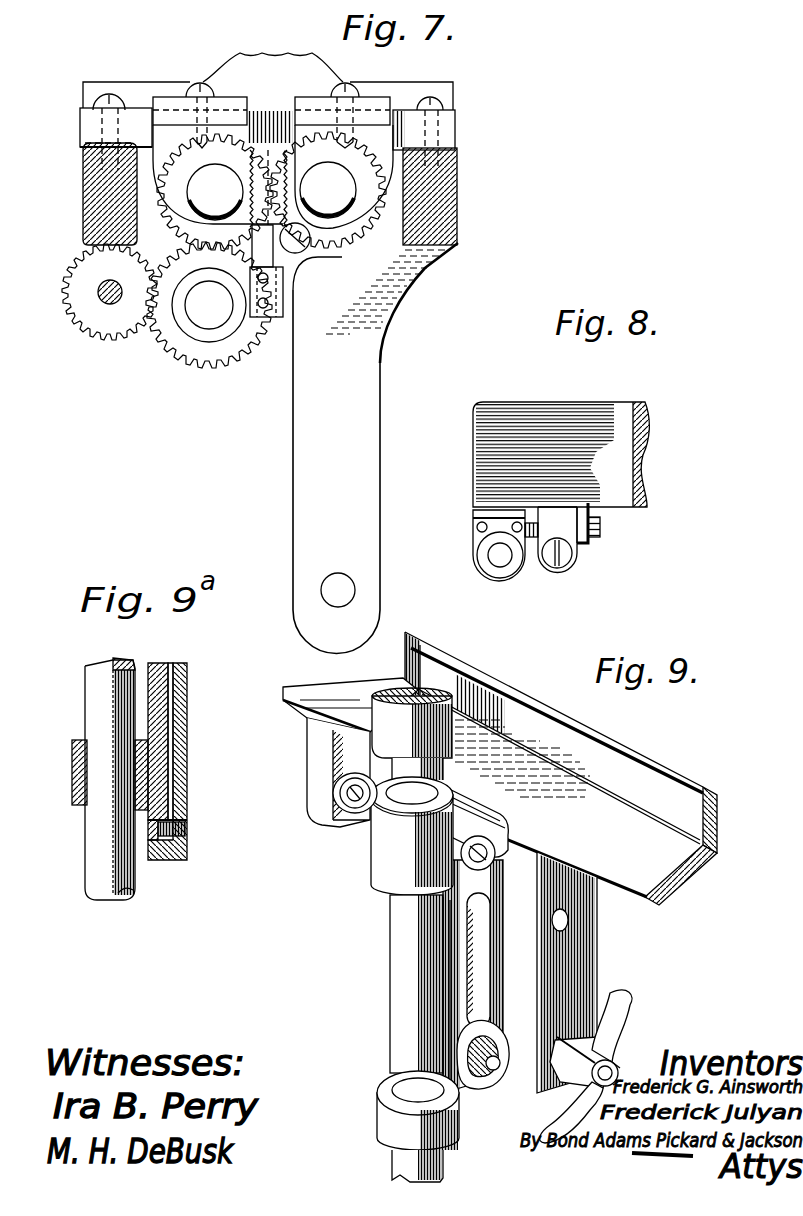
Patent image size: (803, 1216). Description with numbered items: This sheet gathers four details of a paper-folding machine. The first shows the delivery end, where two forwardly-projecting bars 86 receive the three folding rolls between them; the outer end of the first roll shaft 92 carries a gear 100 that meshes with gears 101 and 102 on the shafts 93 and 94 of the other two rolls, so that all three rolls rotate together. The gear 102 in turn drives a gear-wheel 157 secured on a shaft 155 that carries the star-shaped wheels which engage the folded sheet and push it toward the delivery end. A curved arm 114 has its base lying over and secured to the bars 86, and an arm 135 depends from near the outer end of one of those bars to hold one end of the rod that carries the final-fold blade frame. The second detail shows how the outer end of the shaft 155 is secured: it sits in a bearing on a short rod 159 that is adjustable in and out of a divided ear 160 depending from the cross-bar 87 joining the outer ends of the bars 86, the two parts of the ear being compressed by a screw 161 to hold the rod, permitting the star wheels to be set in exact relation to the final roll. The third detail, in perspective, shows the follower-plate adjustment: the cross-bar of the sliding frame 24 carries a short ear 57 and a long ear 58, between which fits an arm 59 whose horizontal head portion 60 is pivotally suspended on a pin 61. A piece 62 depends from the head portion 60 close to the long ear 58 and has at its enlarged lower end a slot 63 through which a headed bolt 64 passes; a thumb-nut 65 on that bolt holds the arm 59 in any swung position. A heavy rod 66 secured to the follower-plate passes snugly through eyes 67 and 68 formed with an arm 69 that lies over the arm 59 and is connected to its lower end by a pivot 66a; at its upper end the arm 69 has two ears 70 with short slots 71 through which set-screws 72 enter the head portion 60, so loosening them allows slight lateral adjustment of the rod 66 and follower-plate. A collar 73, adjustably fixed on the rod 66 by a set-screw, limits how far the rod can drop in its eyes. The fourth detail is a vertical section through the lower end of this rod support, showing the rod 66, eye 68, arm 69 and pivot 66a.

In FIG. 7, the curved arm 114 is at (308, 72).
In FIG. 7, the forwardly-projecting bars 86 is at (84, 208).
In FIG. 7, the shaft of roll 89 92 is at (215, 192).
In FIG. 7, the shaft of roll 90 93 is at (328, 190).
In FIG. 7, the shaft of roll 91 94 is at (209, 305).
In FIG. 7, the gear 100 is at (173, 205).
In FIG. 7, the gear 101 is at (341, 237).
In FIG. 7, the gear 102 is at (247, 337).
In FIG. 7, the arm 135 is at (377, 420).
In FIG. 7, the shaft 155 is at (115, 297).
In FIG. 8, the shaft 155 is at (505, 560).
In FIG. 7, the gear-wheel 157 is at (85, 310).
In FIG. 8, the cross-bar 87 is at (607, 413).
In FIG. 8, the short rod 159 is at (587, 533).
In FIG. 8, the divided ear 160 is at (570, 560).
In FIG. 8, the screw 161 is at (552, 563).
In FIG. 9, the sliding frame 24 is at (690, 847).
In FIG. 9, the ear 57 is at (318, 745).
In FIG. 9, the ear 58 is at (588, 960).
In FIG. 9A, the arm 59 is at (180, 737).
In FIG. 9, the arm 59 is at (473, 957).
In FIG. 9, the head portion 60 is at (480, 820).
In FIG. 9, the pin 61 is at (568, 917).
In FIG. 9, the piece 62 is at (498, 977).
In FIG. 9, the slot 63 is at (503, 1067).
In FIG. 9, the headed bolt 64 is at (612, 1077).
In FIG. 9, the thumb-nut 65 is at (623, 1013).
In FIG. 9A, the rod 66 is at (117, 680).
In FIG. 9, the rod 66 is at (398, 947).
In FIG. 9A, the pivot 66a is at (180, 833).
In FIG. 9, the eye 67 is at (377, 863).
In FIG. 9A, the eye 68 is at (80, 773).
In FIG. 9, the eye 68 is at (383, 1110).
In FIG. 9A, the arm 69 is at (153, 703).
In FIG. 9, the arm 69 is at (450, 977).
In FIG. 9, the ears 70 is at (340, 783).
In FIG. 9, the short slots 71 is at (348, 796).
In FIG. 9, the set-screws 72 is at (367, 810).
In FIG. 9, the collar 73 is at (397, 833).